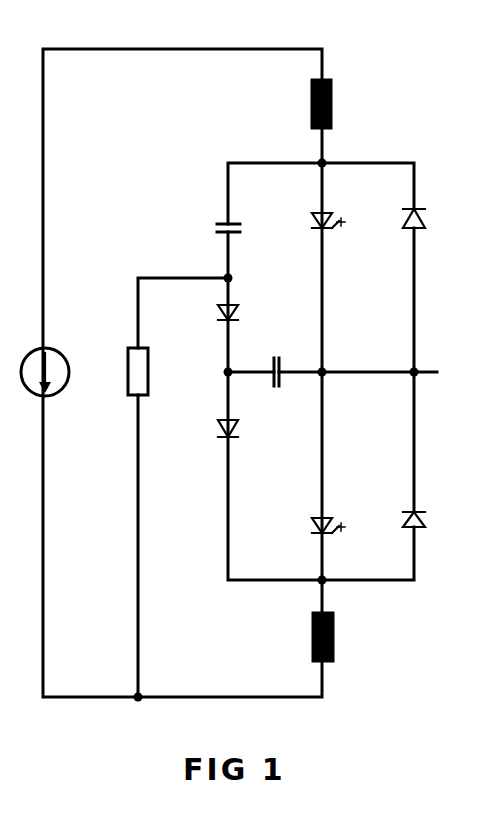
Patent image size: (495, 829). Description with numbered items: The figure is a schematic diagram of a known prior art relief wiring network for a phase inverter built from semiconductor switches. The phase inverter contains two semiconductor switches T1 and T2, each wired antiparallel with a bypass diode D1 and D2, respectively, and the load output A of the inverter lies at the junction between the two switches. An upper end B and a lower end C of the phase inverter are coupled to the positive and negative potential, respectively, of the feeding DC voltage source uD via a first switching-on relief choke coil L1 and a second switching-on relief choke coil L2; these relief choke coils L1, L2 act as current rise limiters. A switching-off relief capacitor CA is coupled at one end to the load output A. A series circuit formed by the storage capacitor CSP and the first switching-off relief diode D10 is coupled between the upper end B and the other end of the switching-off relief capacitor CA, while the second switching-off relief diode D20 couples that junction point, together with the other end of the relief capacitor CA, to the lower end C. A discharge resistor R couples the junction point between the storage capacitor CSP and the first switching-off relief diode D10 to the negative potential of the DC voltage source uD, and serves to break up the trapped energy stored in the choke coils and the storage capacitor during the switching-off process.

The first switching-on relief choke coil L1 is at (332, 102).
The second switching-on relief choke coil L2 is at (334, 637).
The semiconductor switch T1 is at (328, 212).
The semiconductor switch T2 is at (328, 517).
The bypass diode D1 is at (421, 208).
The bypass diode D2 is at (421, 511).
The first switching-off relief diode D10 is at (246, 297).
The second switching-off relief diode D20 is at (240, 420).
The storage capacitor CSP is at (216, 220).
The switching-off relief capacitor CA is at (285, 350).
The discharge resistor R is at (149, 373).
The DC voltage source uD is at (55, 349).
The load output A is at (433, 353).
The upper end B is at (321, 161).
The lower end C is at (323, 582).